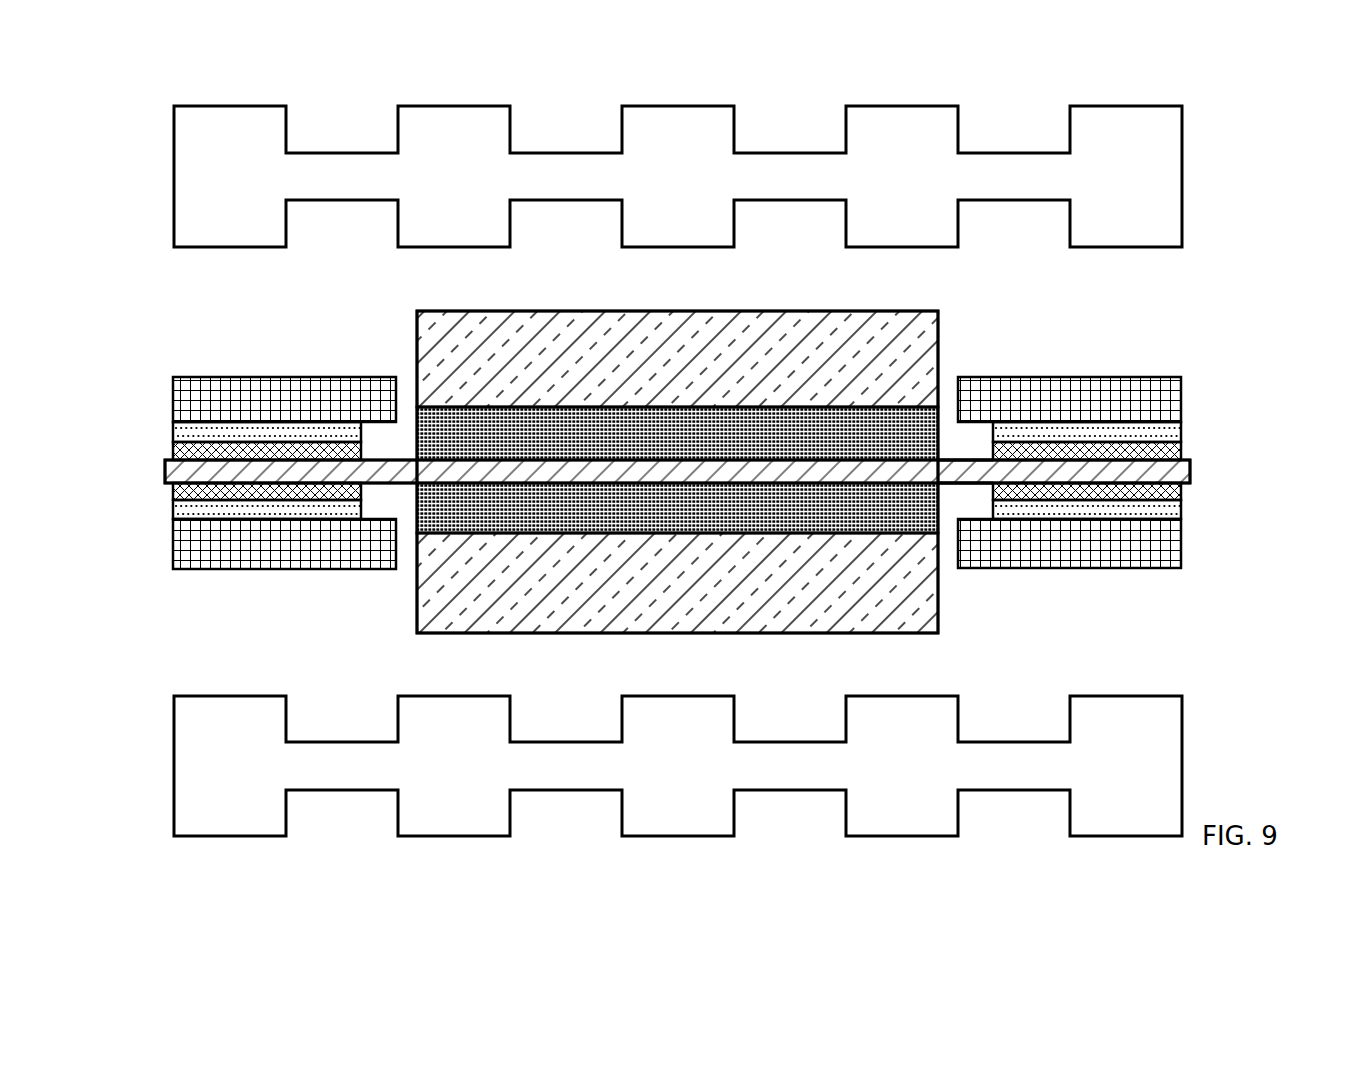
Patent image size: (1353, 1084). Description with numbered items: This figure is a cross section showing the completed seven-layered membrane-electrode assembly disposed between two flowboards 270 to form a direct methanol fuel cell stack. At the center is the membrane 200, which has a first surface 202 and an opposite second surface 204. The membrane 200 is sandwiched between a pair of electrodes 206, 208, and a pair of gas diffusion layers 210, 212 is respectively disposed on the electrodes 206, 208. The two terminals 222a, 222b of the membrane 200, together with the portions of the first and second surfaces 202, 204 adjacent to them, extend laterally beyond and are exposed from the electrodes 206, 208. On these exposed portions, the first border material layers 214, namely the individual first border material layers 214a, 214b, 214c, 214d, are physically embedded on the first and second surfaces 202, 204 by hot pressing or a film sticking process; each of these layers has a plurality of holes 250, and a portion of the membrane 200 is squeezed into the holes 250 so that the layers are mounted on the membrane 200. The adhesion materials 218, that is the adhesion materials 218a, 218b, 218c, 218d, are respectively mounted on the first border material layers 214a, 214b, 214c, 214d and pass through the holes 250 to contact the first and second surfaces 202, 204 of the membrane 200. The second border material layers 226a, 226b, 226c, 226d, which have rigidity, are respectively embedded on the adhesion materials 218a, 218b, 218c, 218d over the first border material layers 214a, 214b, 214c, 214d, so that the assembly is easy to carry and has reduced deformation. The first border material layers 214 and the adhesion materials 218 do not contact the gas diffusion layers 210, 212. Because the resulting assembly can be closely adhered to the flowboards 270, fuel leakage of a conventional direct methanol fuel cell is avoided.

The membrane 200 is at (862, 472).
The first surface 202 is at (972, 459).
The second surface 204 is at (972, 484).
The electrode 206 is at (507, 418).
The electrode 208 is at (498, 520).
The gas diffusion layer 210 is at (680, 322).
The gas diffusion layer 212 is at (670, 614).
The first border material layers 214 is at (1268, 52).
The first border material layer 214a is at (178, 452).
The first border material layer 214b is at (1178, 455).
The first border material layer 214c is at (178, 490).
The first border material layer 214d is at (1178, 490).
The adhesion materials 218 is at (1268, 192).
The adhesion material 218a is at (178, 430).
The adhesion material 218b is at (1177, 432).
The adhesion material 218c is at (178, 508).
The adhesion material 218d is at (1178, 510).
The terminal 222a is at (163, 470).
The terminal 222b is at (1192, 470).
The second border material layer 226a is at (182, 400).
The second border material layer 226b is at (1176, 399).
The second border material layer 226c is at (182, 540).
The second border material layer 226d is at (1178, 542).
The holes 250 is at (268, 448).
The flowboards 270 is at (182, 177).